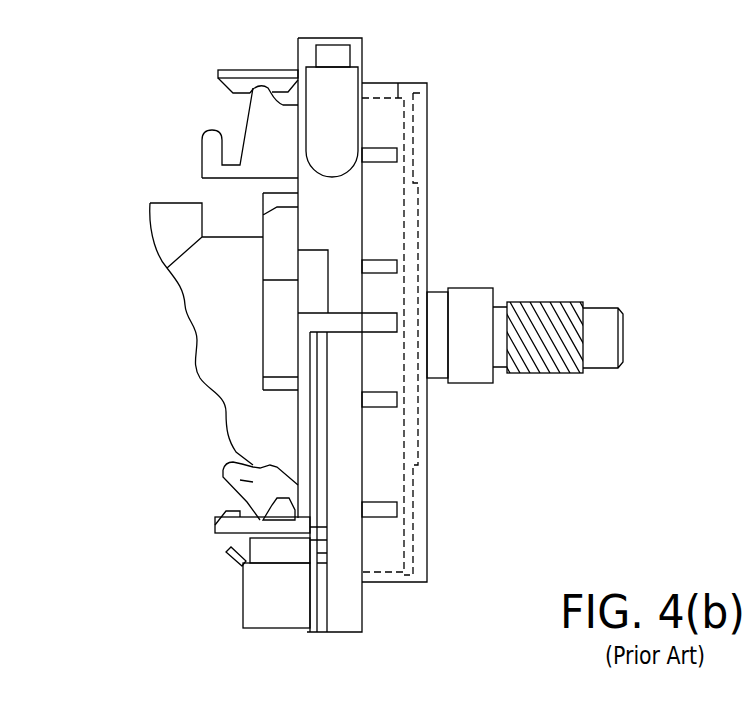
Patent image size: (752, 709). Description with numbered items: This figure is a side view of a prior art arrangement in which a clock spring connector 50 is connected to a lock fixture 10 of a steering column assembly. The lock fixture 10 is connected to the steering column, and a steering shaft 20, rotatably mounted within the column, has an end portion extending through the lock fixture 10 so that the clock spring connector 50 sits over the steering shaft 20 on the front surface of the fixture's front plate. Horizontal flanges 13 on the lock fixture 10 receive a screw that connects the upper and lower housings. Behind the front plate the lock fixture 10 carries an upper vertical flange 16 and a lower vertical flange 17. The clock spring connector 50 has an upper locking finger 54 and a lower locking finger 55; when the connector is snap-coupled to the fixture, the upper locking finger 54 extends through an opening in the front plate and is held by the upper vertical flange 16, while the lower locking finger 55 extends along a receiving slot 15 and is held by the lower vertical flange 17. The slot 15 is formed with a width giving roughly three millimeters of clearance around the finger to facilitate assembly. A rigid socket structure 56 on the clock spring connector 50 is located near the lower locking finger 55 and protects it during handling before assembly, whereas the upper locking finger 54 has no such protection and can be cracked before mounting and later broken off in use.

The lock fixture 10 is at (98, 224).
The horizontal flanges 13 is at (375, 325).
The slot 15 is at (227, 515).
The upper vertical flange 16 is at (273, 150).
The lower vertical flange 17 is at (253, 482).
The steering shaft 20 is at (555, 300).
The clock spring connector 50 is at (420, 236).
The upper locking finger 54 is at (227, 68).
The lower locking finger 55 is at (215, 522).
The socket structure 56 is at (282, 608).